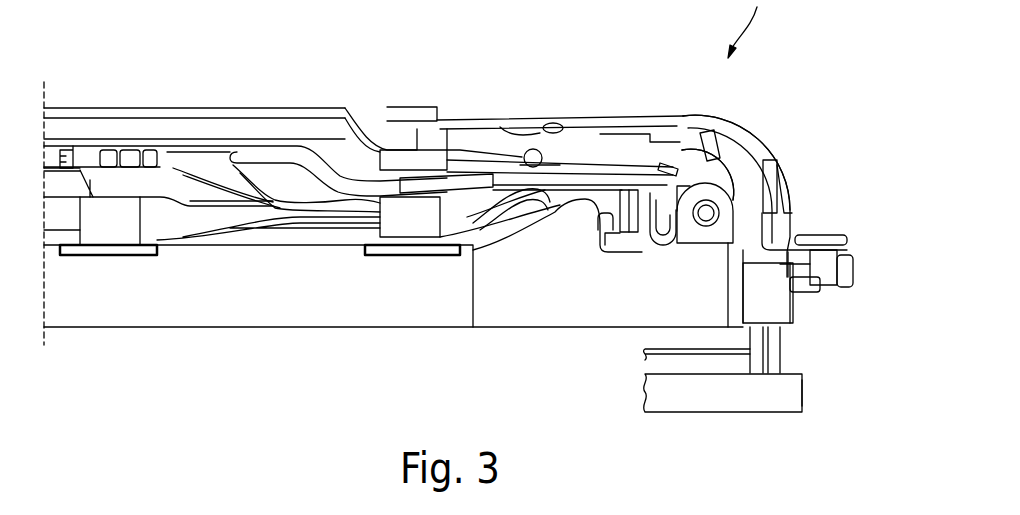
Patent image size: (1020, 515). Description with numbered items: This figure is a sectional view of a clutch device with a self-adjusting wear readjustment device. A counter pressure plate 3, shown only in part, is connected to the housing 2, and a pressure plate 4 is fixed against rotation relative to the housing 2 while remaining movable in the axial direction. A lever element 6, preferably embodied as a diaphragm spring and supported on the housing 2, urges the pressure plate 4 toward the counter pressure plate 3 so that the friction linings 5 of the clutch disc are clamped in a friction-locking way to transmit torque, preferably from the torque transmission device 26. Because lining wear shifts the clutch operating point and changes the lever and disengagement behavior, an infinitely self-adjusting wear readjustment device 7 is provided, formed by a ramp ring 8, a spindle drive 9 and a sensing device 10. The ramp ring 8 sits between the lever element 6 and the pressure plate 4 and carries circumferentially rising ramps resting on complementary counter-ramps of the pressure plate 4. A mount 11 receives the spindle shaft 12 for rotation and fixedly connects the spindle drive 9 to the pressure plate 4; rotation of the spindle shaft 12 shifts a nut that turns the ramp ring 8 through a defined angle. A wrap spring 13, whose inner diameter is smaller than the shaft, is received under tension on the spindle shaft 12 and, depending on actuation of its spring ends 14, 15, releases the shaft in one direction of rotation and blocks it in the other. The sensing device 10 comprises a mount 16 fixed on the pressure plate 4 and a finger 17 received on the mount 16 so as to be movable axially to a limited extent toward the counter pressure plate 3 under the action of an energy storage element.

The housing 2 is at (533, 148).
The counter pressure plate 3 is at (791, 407).
The pressure plate 4 is at (497, 302).
The friction linings 5 is at (648, 362).
The lever element 6 is at (335, 178).
The wear readjustment device 7 is at (737, 169).
The ramp ring 8 is at (633, 203).
The spindle drive 9 is at (758, 190).
The sensing device 10 is at (796, 229).
The mount 11 is at (662, 250).
The spindle shaft 12 is at (699, 228).
The wrap spring 13 is at (715, 154).
The spring end 14 is at (670, 164).
The spring end 15 is at (787, 204).
The mount 16 is at (777, 308).
The finger 17 is at (768, 363).
The torque transmission device 26 is at (817, 393).